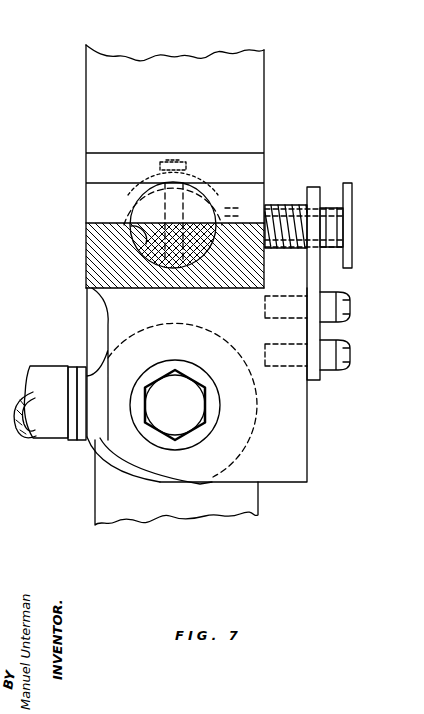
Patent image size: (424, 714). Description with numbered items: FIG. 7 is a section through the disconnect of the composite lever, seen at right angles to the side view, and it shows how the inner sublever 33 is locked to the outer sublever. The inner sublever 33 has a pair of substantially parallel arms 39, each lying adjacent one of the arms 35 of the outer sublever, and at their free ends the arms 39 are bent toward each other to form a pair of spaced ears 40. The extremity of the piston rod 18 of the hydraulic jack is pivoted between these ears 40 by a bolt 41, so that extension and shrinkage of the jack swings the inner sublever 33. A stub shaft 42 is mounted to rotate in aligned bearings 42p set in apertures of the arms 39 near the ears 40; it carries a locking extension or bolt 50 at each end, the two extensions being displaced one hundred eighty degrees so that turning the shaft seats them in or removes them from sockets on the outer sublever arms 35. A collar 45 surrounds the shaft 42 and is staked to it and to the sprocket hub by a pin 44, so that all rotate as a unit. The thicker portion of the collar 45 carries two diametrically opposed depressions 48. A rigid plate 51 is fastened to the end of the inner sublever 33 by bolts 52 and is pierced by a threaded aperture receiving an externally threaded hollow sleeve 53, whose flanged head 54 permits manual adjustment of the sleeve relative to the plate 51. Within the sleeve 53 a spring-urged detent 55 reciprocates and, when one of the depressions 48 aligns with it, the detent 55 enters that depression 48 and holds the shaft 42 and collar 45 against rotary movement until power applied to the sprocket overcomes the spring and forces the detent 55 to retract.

The piston rod 18 is at (44, 380).
The inner sublever 33 is at (240, 136).
The arms of outer sublever 35 is at (148, 518).
The arms of inner sublever 39 is at (265, 90).
The ears 40 is at (150, 458).
The bolt or attaching means 41 is at (186, 400).
The stub shaft 42 is at (204, 190).
The bearings 42p is at (220, 208).
The pin or stake 44 is at (172, 160).
The collar 45 is at (142, 178).
The depressions 48 is at (86, 233).
The locking extension or bolt 50 is at (131, 222).
The rigid plate 51 is at (313, 188).
The bolts or attaching means 52 is at (352, 350).
The externally threaded hollow sleeve 53 is at (295, 205).
The flanged head 54 is at (347, 203).
The detent 55 is at (268, 253).